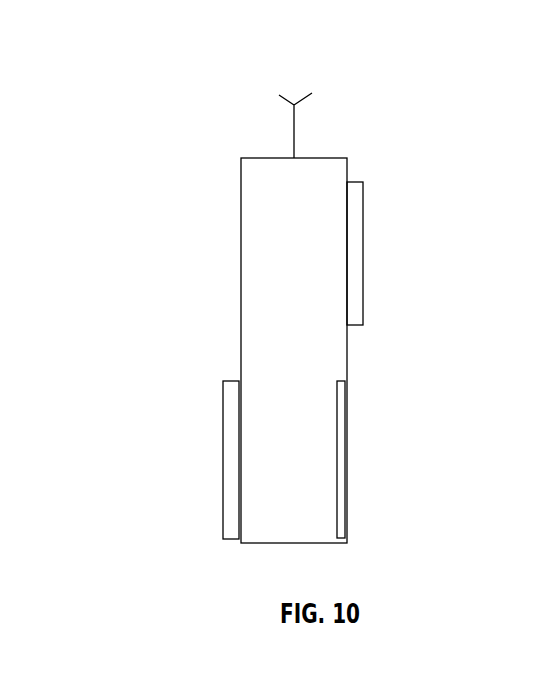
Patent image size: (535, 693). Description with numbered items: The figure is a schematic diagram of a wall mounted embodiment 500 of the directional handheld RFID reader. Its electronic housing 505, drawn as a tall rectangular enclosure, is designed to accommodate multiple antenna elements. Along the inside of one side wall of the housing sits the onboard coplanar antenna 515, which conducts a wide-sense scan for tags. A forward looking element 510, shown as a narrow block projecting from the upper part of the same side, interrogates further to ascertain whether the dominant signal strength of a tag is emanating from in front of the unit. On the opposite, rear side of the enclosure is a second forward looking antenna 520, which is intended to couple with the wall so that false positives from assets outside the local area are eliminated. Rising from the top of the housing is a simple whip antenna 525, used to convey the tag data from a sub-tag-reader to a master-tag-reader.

The wall mounted embodiment 500 is at (126, 90).
The electronic housing 505 is at (264, 266).
The forward looking element 510 is at (368, 233).
The onboard coplanar antenna 515 is at (353, 462).
The second forward looking antenna 520 is at (217, 464).
The whip antenna 525 is at (288, 130).